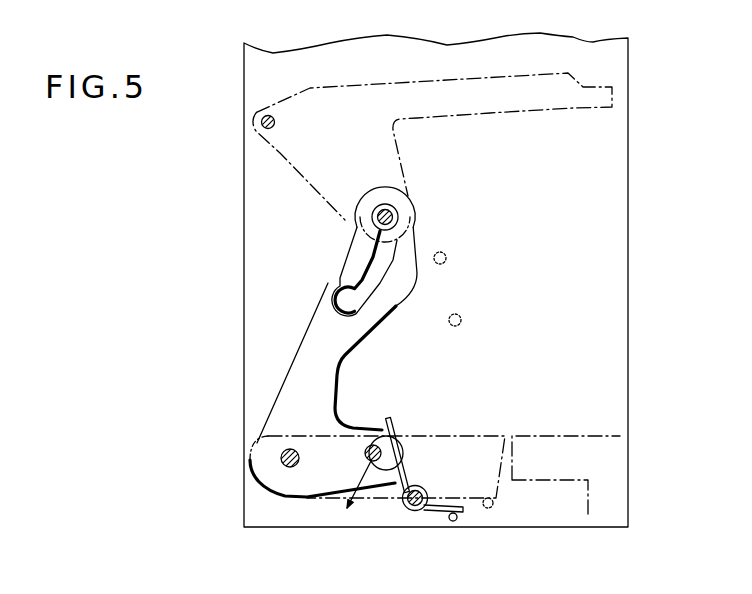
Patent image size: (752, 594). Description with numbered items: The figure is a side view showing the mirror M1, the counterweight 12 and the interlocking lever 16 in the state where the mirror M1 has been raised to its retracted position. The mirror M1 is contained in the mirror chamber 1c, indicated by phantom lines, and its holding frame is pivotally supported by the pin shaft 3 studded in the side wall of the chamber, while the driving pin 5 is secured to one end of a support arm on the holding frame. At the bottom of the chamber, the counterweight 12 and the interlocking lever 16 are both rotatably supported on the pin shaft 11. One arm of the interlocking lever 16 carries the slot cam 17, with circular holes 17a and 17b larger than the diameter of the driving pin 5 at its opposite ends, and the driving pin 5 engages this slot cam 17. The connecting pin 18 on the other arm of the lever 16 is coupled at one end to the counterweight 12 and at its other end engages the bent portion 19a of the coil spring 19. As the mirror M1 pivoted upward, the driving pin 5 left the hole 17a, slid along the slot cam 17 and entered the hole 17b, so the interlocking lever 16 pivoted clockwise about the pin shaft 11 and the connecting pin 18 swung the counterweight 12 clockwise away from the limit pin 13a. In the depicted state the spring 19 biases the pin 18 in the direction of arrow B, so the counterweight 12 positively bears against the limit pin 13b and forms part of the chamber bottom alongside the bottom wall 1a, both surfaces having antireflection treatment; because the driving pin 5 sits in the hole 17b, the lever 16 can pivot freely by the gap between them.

The bottom wall 1a is at (565, 433).
The mirror chamber 1c is at (630, 163).
The pin shaft 3 is at (261, 123).
The driving pin 5 is at (374, 220).
The pin shaft 11 is at (282, 465).
The counterweight 12 is at (477, 433).
The limit pin 13a is at (462, 319).
The limit pin 13b is at (488, 509).
The interlocking lever 16 is at (298, 370).
The slot cam 17 is at (403, 270).
The circular hole 17a is at (333, 304).
The circular hole 17b is at (393, 213).
The connecting pin 18 is at (372, 444).
The coil spring 19 is at (399, 494).
The bent portion 19a is at (400, 444).
The arrow B is at (344, 512).
The mirror M1 is at (466, 106).